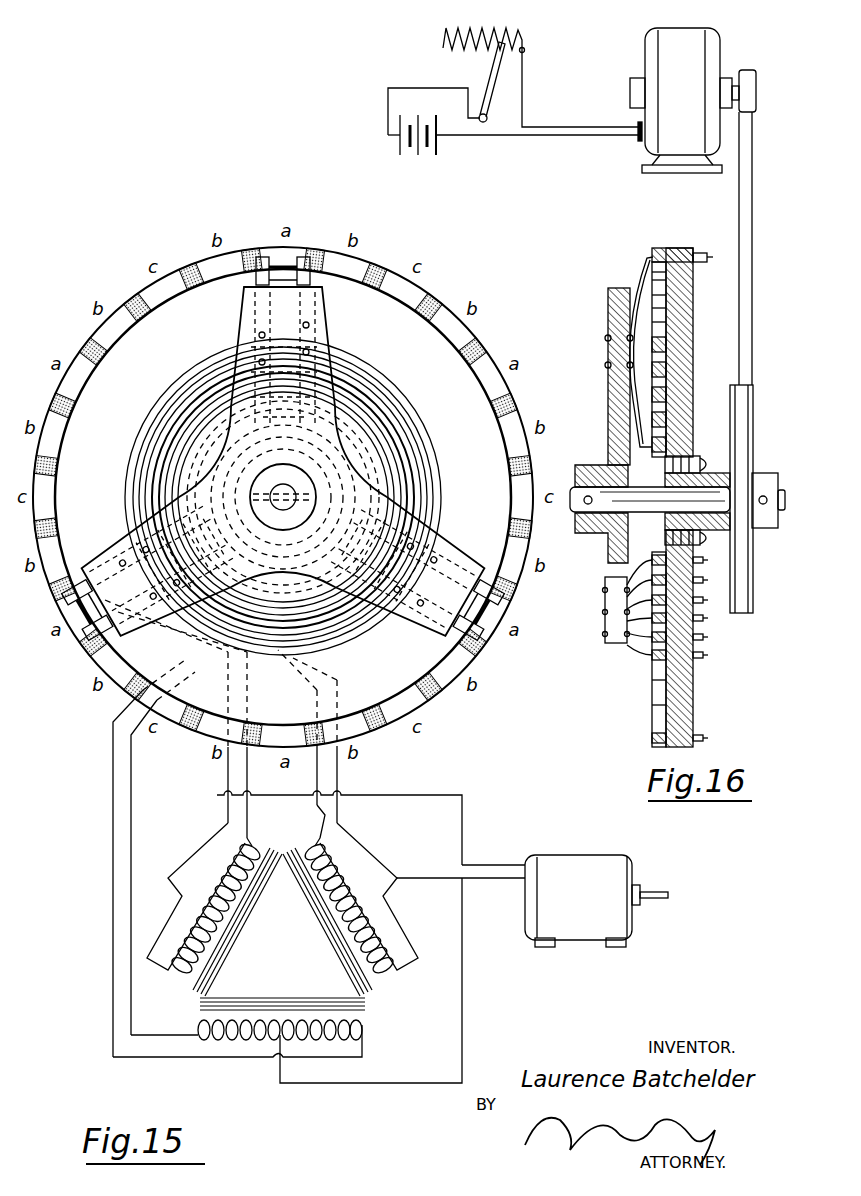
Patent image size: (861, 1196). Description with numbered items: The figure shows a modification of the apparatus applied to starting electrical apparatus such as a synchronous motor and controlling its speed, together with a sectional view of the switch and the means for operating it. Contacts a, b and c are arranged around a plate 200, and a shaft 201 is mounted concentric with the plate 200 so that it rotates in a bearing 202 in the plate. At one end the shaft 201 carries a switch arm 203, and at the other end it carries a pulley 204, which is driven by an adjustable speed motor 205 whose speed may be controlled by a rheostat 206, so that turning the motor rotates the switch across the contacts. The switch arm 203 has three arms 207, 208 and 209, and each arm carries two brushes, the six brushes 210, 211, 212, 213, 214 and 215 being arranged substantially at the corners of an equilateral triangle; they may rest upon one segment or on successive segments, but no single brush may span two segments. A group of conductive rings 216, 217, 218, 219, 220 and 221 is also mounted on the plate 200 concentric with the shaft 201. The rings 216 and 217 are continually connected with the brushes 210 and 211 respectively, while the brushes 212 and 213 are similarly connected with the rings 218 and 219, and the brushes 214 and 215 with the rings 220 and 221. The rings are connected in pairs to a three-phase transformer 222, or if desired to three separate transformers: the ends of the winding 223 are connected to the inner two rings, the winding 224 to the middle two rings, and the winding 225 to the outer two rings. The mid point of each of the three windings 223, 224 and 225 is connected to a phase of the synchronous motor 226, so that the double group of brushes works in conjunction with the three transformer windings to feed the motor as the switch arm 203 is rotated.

In FIG. 16, the plate 200 is at (693, 302).
In FIG. 16, the shaft 201 is at (618, 460).
In FIG. 16, the bearing 202 is at (700, 472).
In FIG. 16, the switch arm 203 is at (608, 380).
In FIG. 16, the pulley 204 is at (755, 440).
In FIG. 16, the adjustable speed motor 205 is at (722, 52).
In FIG. 16, the rheostat 206 is at (505, 70).
In FIG. 15, the arm 207 is at (283, 426).
In FIG. 15, the arm 208 is at (421, 445).
In FIG. 15, the arm 209 is at (52, 577).
In FIG. 15, the brush 210 is at (267, 242).
In FIG. 15, the brush 211 is at (319, 242).
In FIG. 15, the brush 212 is at (489, 592).
In FIG. 15, the brush 213 is at (468, 627).
In FIG. 15, the brush 214 is at (77, 592).
In FIG. 15, the brush 215 is at (97, 627).
In FIG. 15, the conductive ring 216 is at (326, 427).
In FIG. 15, the conductive ring 217 is at (334, 444).
In FIG. 15, the conductive ring 218 is at (335, 459).
In FIG. 15, the conductive ring 219 is at (338, 473).
In FIG. 15, the conductive ring 220 is at (345, 487).
In FIG. 15, the conductive ring 221 is at (342, 497).
In FIG. 15, the three-phase transformer 222 is at (282, 929).
In FIG. 15, the winding 223 is at (330, 1040).
In FIG. 15, the winding 224 is at (180, 935).
In FIG. 15, the winding 225 is at (375, 800).
In FIG. 15, the synchronous motor 226 is at (545, 856).